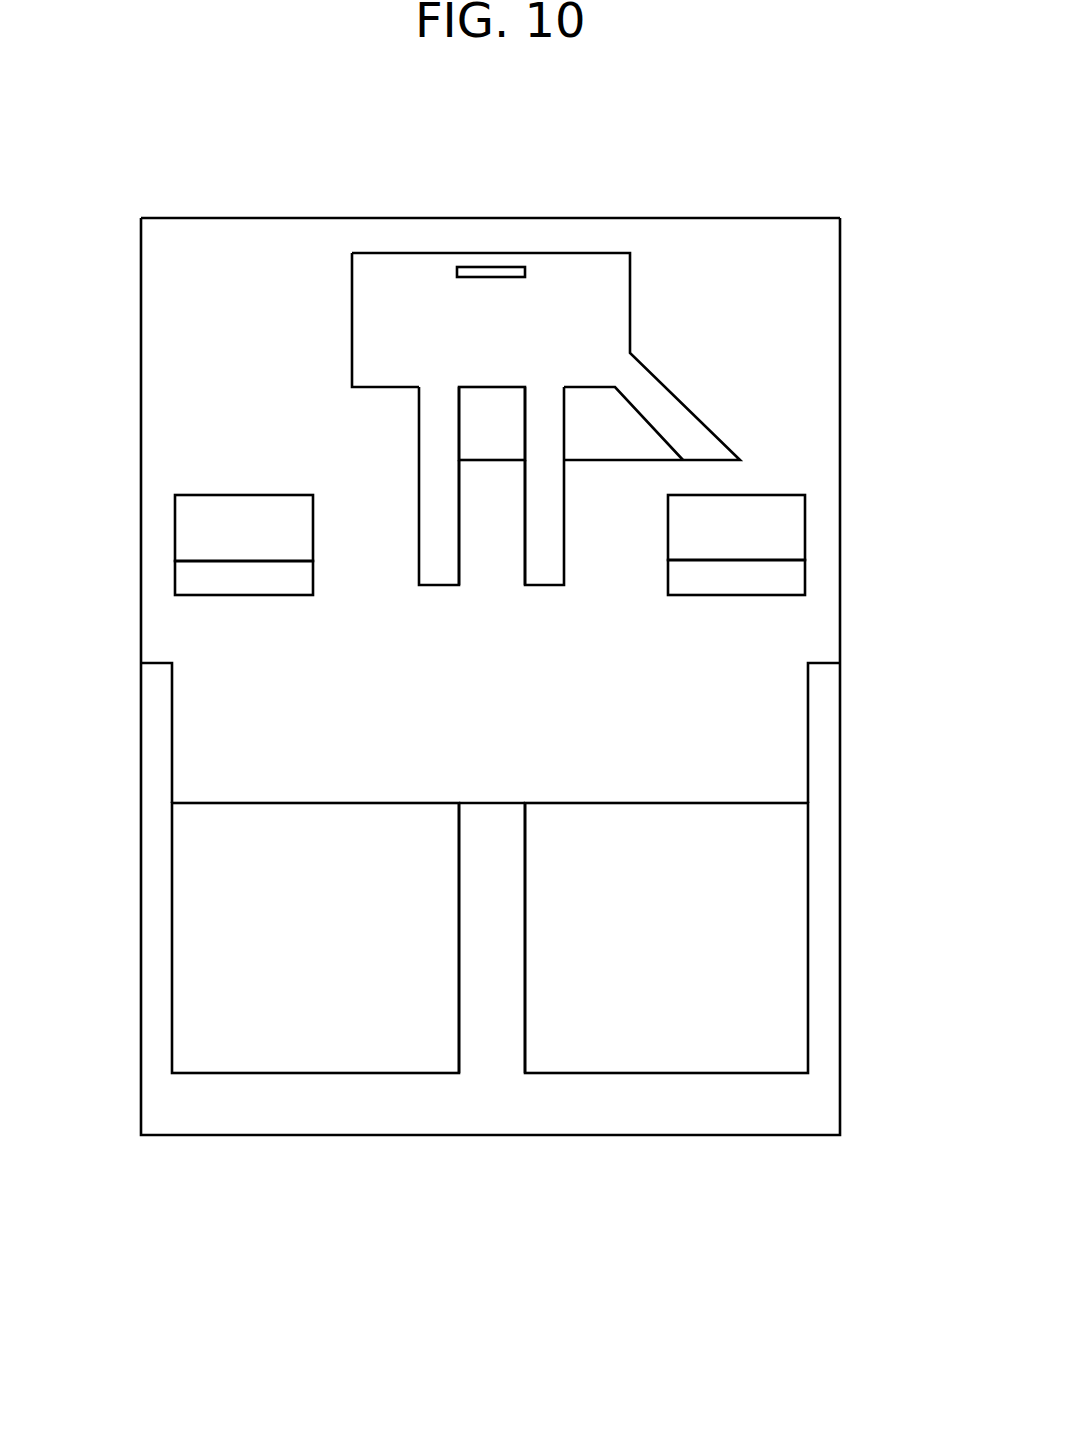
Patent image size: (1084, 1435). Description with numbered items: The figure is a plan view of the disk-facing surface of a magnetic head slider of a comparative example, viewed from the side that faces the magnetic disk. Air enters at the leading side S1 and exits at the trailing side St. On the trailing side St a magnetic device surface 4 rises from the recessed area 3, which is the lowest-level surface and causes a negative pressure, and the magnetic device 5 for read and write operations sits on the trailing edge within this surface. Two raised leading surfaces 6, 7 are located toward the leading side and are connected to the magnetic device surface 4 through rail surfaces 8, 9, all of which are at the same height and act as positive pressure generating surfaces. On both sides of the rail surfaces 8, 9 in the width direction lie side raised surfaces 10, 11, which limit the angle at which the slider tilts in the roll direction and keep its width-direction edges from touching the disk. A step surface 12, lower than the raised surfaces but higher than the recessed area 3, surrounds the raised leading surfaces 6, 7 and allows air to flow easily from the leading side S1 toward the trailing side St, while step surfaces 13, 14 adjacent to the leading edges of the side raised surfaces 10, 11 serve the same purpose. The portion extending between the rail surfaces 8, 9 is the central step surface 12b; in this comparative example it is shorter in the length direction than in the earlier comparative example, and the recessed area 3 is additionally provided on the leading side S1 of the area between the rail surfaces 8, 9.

The recessed area 3 is at (489, 568).
The magnetic device surface 4 is at (585, 296).
The magnetic device 5 is at (501, 268).
The raised leading surface 6 is at (260, 1043).
The raised leading surface 7 is at (715, 1045).
The rail surface 8 is at (443, 568).
The rail surface 9 is at (547, 545).
The side raised surface 10 is at (202, 524).
The side raised surface 11 is at (782, 532).
The step surface 12 is at (488, 1098).
The central step surface 12b is at (492, 428).
The step surface 13 is at (202, 583).
The step surface 14 is at (790, 585).
The leading side S1 is at (593, 1136).
The trailing side St is at (525, 218).